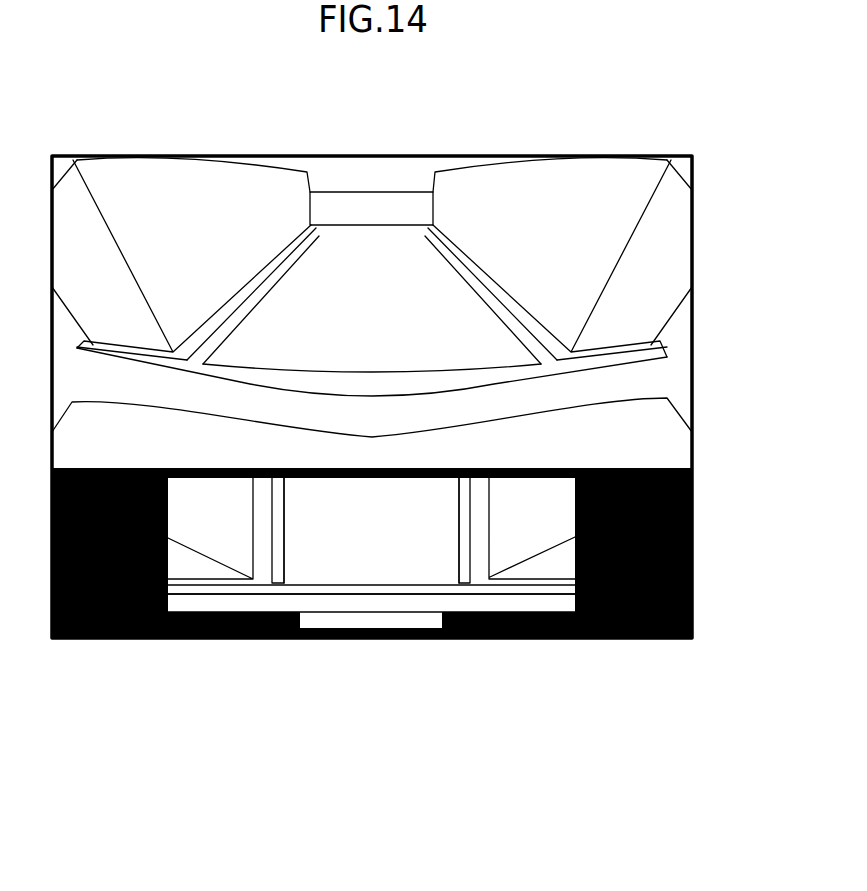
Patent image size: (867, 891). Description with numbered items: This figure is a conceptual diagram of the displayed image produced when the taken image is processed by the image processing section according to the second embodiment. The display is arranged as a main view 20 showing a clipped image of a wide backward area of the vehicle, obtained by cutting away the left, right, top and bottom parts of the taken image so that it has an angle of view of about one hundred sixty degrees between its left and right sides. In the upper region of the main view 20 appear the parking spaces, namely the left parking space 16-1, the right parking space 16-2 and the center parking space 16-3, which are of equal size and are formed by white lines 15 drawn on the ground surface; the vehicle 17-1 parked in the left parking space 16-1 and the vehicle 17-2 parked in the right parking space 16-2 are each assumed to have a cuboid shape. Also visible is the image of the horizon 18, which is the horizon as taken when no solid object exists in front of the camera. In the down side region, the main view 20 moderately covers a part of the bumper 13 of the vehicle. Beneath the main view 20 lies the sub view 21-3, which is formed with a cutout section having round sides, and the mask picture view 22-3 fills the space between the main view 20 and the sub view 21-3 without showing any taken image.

The bumper 13 is at (318, 612).
The white lines 15 is at (578, 365).
The left parking space 16-1 is at (233, 297).
The right parking space 16-2 is at (497, 287).
The center parking space 16-3 is at (388, 240).
The vehicle parked in the left parking space 17-1 is at (128, 182).
The vehicle parked in the right parking space 17-2 is at (613, 178).
The image of the horizon 18 is at (338, 192).
The main view 20 is at (675, 332).
The sub view 21-3 is at (567, 608).
The mask picture view 22-3 is at (650, 606).